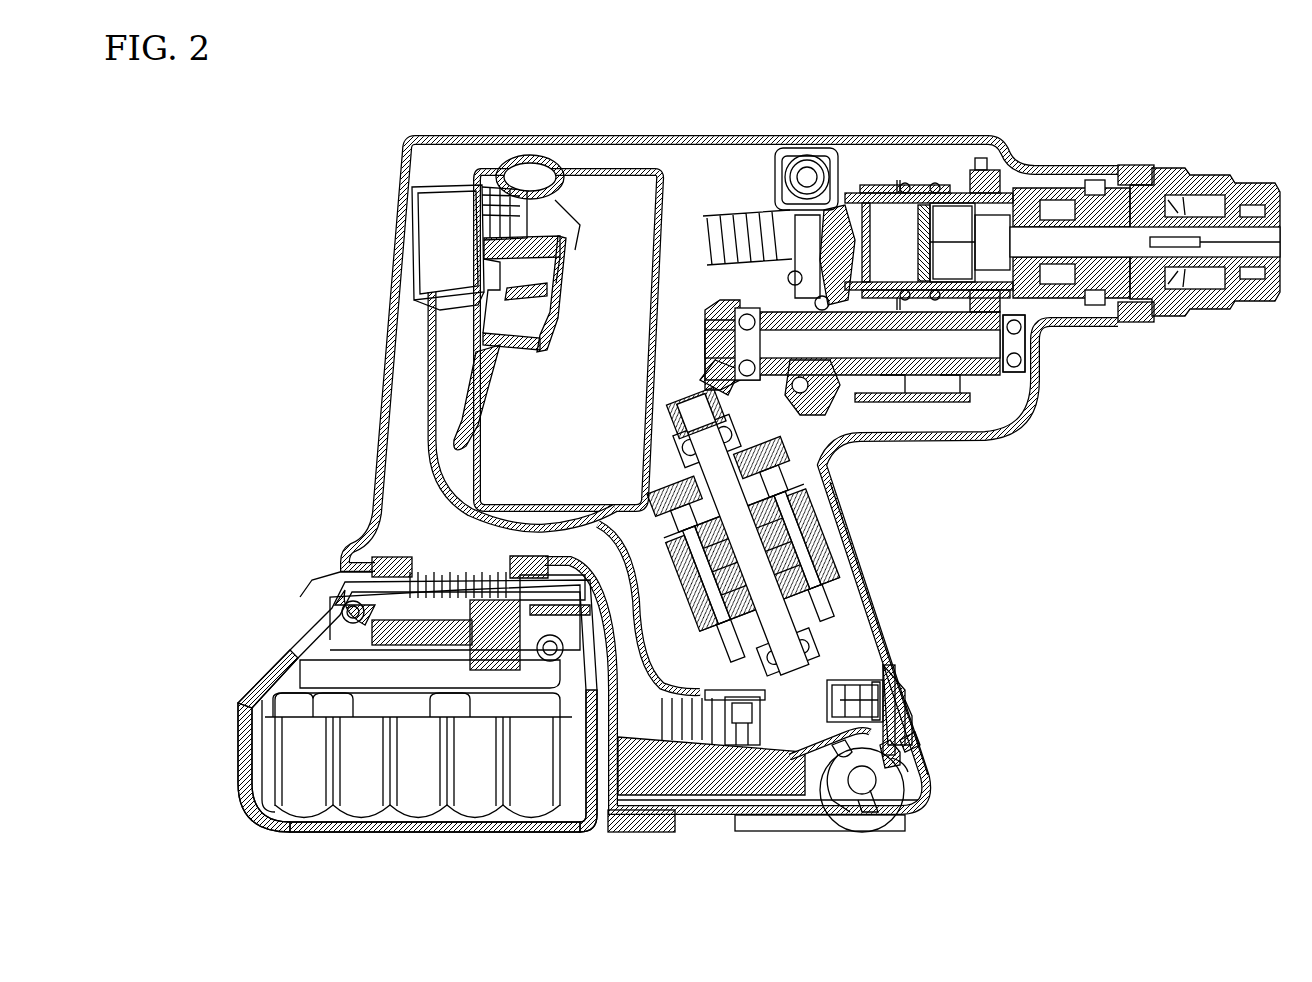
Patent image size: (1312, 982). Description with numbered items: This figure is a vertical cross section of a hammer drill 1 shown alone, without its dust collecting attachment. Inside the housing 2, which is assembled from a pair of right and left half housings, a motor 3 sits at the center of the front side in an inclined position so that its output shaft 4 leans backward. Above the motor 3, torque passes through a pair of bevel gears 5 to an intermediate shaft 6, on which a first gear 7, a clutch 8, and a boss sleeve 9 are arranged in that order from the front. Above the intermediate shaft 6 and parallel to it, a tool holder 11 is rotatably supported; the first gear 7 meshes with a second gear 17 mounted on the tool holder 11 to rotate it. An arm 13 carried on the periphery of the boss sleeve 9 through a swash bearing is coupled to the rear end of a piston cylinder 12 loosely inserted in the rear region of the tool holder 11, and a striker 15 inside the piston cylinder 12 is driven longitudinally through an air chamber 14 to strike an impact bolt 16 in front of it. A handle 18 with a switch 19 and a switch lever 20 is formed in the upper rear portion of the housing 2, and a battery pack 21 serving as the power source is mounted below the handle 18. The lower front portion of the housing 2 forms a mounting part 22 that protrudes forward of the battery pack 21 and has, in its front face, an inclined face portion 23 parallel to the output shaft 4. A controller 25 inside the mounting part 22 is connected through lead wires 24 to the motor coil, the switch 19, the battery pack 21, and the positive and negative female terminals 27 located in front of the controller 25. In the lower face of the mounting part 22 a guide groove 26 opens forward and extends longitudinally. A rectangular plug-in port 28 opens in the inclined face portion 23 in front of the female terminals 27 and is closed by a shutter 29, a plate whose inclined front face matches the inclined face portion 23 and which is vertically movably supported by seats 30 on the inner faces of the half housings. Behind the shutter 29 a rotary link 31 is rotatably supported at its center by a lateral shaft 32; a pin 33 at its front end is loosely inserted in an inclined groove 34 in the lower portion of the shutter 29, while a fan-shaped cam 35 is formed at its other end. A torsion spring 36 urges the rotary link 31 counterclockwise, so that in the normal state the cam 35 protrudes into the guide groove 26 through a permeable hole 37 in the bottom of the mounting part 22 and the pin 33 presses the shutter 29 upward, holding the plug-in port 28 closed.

The hammer drill 1 is at (722, 114).
The housing 2 is at (677, 133).
The motor 3 is at (790, 540).
The output shaft 4 is at (745, 512).
The bevel gears 5 is at (705, 330).
The intermediate shaft 6 is at (995, 370).
The first gear 7 is at (985, 345).
The clutch 8 is at (905, 400).
The boss sleeve 9 is at (828, 395).
The tool holder 11 is at (1135, 185).
The piston cylinder 12 is at (940, 230).
The arm 13 is at (822, 150).
The air chamber 14 is at (893, 240).
The striker 15 is at (924, 205).
The impact bolt 16 is at (1045, 235).
The second gear 17 is at (982, 168).
The handle 18 is at (405, 340).
The switch 19 is at (438, 240).
The switch lever 20 is at (563, 262).
The battery pack 21 is at (400, 795).
The mounting part 22 is at (700, 800).
The inclined face portion 23 is at (866, 598).
The lead wires 24 is at (563, 523).
The controller 25 is at (648, 768).
The guide groove 26 is at (757, 822).
The female terminals 27 is at (860, 683).
The plug-in port 28 is at (900, 704).
The shutter 29 is at (912, 720).
The seats 30 is at (888, 680).
The rotary link 31 is at (905, 775).
The lateral shaft 32 is at (870, 792).
The pin 33 is at (900, 760).
The inclined groove 34 is at (915, 745).
The cam 35 is at (848, 812).
The torsion spring 36 is at (832, 795).
The permeable hole 37 is at (862, 795).